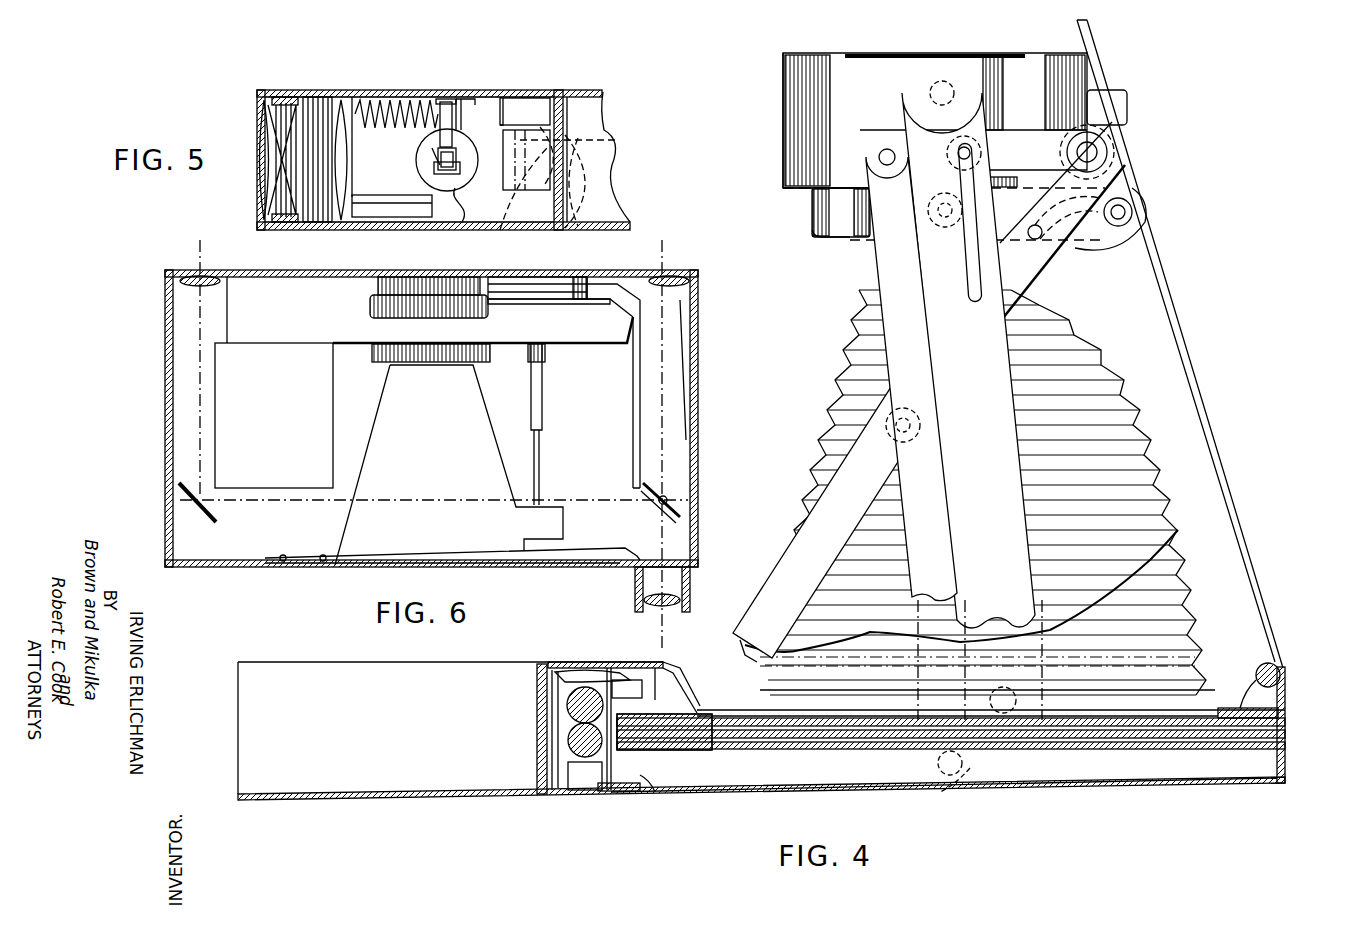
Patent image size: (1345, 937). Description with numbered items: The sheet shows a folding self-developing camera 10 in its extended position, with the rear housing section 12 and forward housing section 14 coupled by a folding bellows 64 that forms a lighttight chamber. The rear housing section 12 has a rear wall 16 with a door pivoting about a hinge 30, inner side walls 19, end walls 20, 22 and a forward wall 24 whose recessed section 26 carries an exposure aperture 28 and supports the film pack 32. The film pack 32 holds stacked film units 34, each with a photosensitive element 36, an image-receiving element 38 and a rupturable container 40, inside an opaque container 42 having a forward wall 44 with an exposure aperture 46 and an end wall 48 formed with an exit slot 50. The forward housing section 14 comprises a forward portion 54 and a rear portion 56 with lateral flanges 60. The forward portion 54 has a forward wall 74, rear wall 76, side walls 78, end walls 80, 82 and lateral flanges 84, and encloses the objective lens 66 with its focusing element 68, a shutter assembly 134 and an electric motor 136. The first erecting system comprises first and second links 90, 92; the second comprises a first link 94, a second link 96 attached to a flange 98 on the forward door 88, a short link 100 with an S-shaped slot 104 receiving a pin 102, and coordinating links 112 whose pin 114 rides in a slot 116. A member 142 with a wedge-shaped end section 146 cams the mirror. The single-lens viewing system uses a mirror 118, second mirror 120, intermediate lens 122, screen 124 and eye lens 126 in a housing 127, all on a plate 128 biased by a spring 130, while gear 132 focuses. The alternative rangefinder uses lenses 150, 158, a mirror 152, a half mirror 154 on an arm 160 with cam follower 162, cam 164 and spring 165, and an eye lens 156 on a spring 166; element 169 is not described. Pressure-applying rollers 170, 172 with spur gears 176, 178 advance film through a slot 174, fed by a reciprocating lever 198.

In FIG. 4, the camera 10 is at (845, 296).
In FIG. 4, the rear housing section 12 is at (318, 802).
In FIG. 4, the forward housing section 14 is at (782, 172).
In FIG. 4, the rear wall 16 is at (1085, 785).
In FIG. 4, the inner side walls 19 is at (344, 724).
In FIG. 4, the end wall 20 is at (535, 775).
In FIG. 4, the end wall 22 is at (1287, 730).
In FIG. 4, the forward wall 24 is at (648, 662).
In FIG. 4, the recessed section 26 is at (870, 712).
In FIG. 4, the exposure aperture 28 is at (785, 710).
In FIG. 4, the hinge 30 is at (610, 793).
In FIG. 4, the film pack 32 is at (740, 790).
In FIG. 4, the film units 34 is at (805, 749).
In FIG. 4, the photosensitive element 36 is at (1108, 730).
In FIG. 4, the image-receiving element 38 is at (1070, 728).
In FIG. 4, the rupturable container 40 is at (680, 750).
In FIG. 4, the opaque container 42 is at (888, 790).
In FIG. 4, the forward wall 44 is at (1265, 665).
In FIG. 4, the exposure aperture 46 is at (860, 712).
In FIG. 4, the end wall 48 is at (628, 796).
In FIG. 4, the exit slot 50 is at (615, 752).
In FIG. 5, the forward portion 54 is at (548, 84).
In FIG. 4, the forward portion 54 is at (782, 111).
In FIG. 4, the rear portion 56 is at (811, 213).
In FIG. 4, the lateral flanges 60 is at (815, 233).
In FIG. 4, the folding bellows 64 is at (1165, 545).
In FIG. 5, the objective lens 66 is at (256, 128).
In FIG. 6, the objective lens 66 is at (412, 268).
In FIG. 5, the lens element 68 is at (262, 172).
In FIG. 5, the forward wall 74 is at (466, 97).
In FIG. 5, the rear wall 76 is at (320, 230).
In FIG. 6, the side walls 78 is at (165, 418).
In FIG. 4, the side walls 78 is at (825, 62).
In FIG. 5, the end wall 80 is at (272, 218).
In FIG. 5, the end wall 82 is at (566, 110).
In FIG. 6, the end wall 82 is at (250, 568).
In FIG. 4, the lateral flanges 84 is at (980, 53).
In FIG. 4, the forward door 88 is at (1228, 478).
In FIG. 4, the first link 90 is at (905, 548).
In FIG. 4, the second link 92 is at (1015, 468).
In FIG. 4, the first link 94 is at (785, 577).
In FIG. 4, the second link 96 is at (1040, 272).
In FIG. 4, the flange 98 is at (1112, 137).
In FIG. 4, the short link 100 is at (1135, 236).
In FIG. 4, the pin 102 is at (1100, 190).
In FIG. 4, the S-shaped slot 104 is at (1133, 210).
In FIG. 4, the links 112 is at (1020, 132).
In FIG. 4, the pin 114 is at (958, 150).
In FIG. 4, the slot 116 is at (968, 250).
In FIG. 5, the mirror 118 is at (436, 163).
In FIG. 5, the second mirror 120 is at (462, 146).
In FIG. 5, the intermediate lens 122 is at (432, 150).
In FIG. 5, the screen 124 is at (500, 230).
In FIG. 5, the eye lens 126 is at (600, 143).
In FIG. 4, the housing 127 is at (1130, 102).
In FIG. 5, the plate 128 is at (446, 99).
In FIG. 5, the spring 130 is at (403, 98).
In FIG. 6, the manually engageable gear 132 is at (556, 277).
In FIG. 5, the shutter assembly 134 is at (312, 100).
In FIG. 6, the electric motor 136 is at (256, 384).
In FIG. 5, the member 142 is at (402, 196).
In FIG. 6, the member 142 is at (548, 445).
In FIG. 5, the wedge-shaped end section 146 is at (460, 196).
In FIG. 6, the lens 150 is at (192, 274).
In FIG. 6, the mirror 152 is at (182, 500).
In FIG. 6, the half mirror 154 is at (690, 500).
In FIG. 6, the eye lens 156 is at (670, 612).
In FIG. 6, the lens 158 is at (685, 278).
In FIG. 6, the arm 160 is at (645, 380).
In FIG. 6, the cam follower 162 is at (615, 282).
In FIG. 6, the cam 164 is at (512, 277).
In FIG. 6, the spring 165 is at (688, 402).
In FIG. 6, the spring 166 is at (590, 550).
In FIG. 6, the reflector 169 is at (449, 454).
In FIG. 4, the pressure-applying roller 170 is at (570, 688).
In FIG. 4, the pressure-applying roller 172 is at (575, 792).
In FIG. 4, the slot 174 is at (540, 720).
In FIG. 4, the spur gear 176 is at (560, 670).
In FIG. 4, the spur gear 178 is at (566, 740).
In FIG. 4, the reciprocating lever 198 is at (653, 668).